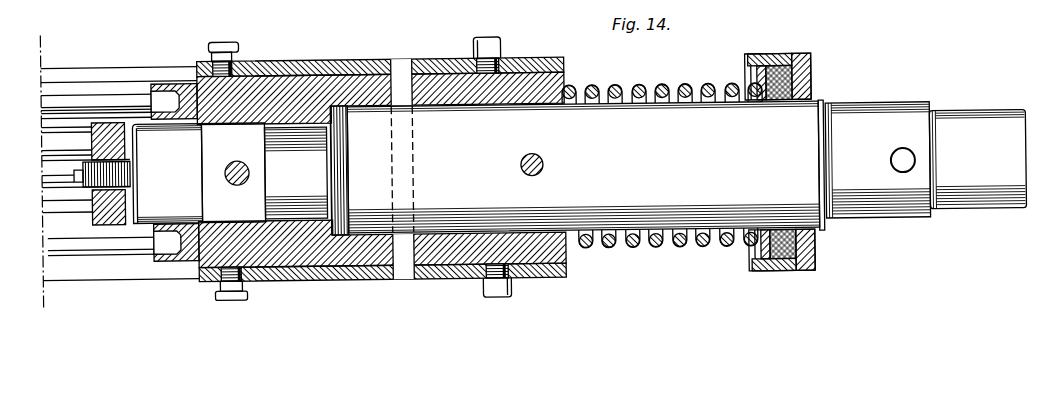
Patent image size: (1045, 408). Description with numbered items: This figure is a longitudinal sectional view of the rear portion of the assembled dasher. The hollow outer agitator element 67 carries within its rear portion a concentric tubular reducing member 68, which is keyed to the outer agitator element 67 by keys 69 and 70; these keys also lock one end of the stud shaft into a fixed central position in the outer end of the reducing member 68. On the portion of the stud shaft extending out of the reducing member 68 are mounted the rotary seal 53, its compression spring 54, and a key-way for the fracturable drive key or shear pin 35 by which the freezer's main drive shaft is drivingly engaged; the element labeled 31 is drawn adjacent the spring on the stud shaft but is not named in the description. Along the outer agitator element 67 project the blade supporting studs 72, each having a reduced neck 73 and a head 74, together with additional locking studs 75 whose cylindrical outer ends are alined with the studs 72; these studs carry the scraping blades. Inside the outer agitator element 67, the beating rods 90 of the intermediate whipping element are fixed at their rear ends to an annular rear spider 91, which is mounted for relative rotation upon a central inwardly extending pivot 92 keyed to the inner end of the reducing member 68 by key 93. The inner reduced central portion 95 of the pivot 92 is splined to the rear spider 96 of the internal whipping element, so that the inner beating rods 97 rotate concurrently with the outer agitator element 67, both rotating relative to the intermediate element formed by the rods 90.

The upper coil spring 31 is at (643, 108).
The shear pin 35 is at (900, 155).
The rotary seal 53 is at (790, 58).
The compression spring 54 is at (703, 252).
The outer agitator element 67 is at (343, 60).
The reducing member 68 is at (462, 254).
The key 69 is at (398, 272).
The key 70 is at (544, 165).
The blade supporting stud 72 is at (242, 57).
The reduced neck 73 is at (210, 50).
The head 74 is at (227, 40).
The locking stud 75 is at (487, 38).
The beating rod 90 is at (50, 166).
The rear spider 91 is at (185, 251).
The pivot 92 is at (50, 136).
The key 93 is at (237, 157).
The inner reduced central portion 95 is at (83, 168).
The rear spider 96 is at (107, 125).
The beating rod 97 is at (52, 202).